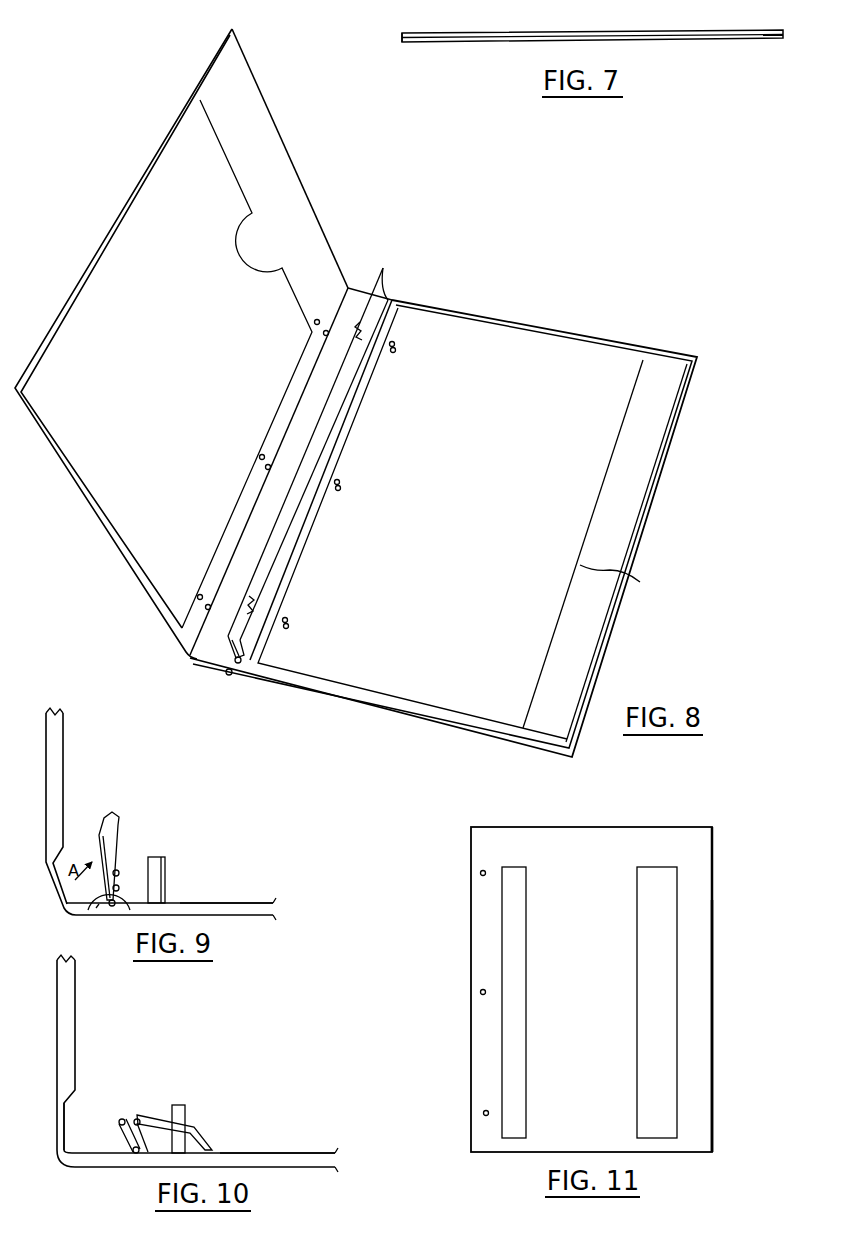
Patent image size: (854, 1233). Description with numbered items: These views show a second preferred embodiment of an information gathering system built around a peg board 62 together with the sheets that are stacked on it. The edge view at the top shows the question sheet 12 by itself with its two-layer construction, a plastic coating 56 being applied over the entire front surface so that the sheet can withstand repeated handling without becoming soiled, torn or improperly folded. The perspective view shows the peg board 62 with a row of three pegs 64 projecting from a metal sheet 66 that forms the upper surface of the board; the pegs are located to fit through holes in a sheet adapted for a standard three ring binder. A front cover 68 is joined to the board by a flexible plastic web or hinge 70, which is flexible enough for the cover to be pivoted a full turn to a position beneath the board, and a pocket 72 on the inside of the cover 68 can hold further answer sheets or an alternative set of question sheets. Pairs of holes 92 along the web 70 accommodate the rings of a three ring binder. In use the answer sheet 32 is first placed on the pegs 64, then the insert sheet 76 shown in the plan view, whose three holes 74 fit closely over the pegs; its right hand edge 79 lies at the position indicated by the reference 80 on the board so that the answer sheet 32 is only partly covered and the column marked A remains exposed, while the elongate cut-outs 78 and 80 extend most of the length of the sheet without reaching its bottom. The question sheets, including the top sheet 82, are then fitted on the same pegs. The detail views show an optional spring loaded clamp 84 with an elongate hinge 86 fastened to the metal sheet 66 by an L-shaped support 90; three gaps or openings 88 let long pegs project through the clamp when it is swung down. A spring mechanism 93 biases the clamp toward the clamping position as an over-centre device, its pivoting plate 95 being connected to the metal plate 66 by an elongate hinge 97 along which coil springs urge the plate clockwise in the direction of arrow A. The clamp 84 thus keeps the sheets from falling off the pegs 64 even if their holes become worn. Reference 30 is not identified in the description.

In FIG. 7, the question sheet 12 is at (458, 46).
In FIG. 7, the plastic coating 56 is at (458, 33).
In FIG. 8, the clip 30 is at (228, 670).
In FIG. 8, the answer sheet 32 is at (643, 468).
In FIG. 8, the peg board 62 is at (670, 355).
In FIG. 9, the peg board 62 is at (240, 918).
In FIG. 10, the peg board 62 is at (285, 1170).
In FIG. 8, the pegs 64 is at (395, 342).
In FIG. 9, the pegs 64 is at (165, 880).
In FIG. 10, the pegs 64 is at (187, 1118).
In FIG. 9, the metal sheet 66 is at (250, 903).
In FIG. 10, the metal sheet 66 is at (293, 1153).
In FIG. 8, the front cover 68 is at (140, 593).
In FIG. 9, the front cover 68 is at (65, 758).
In FIG. 10, the front cover 68 is at (77, 1010).
In FIG. 10, the flexible plastic web or hinge 70 is at (68, 1131).
In FIG. 8, the pocket 72 is at (118, 282).
In FIG. 11, the holes 74 is at (480, 876).
In FIG. 11, the insert sheet 76 is at (714, 955).
In FIG. 11, the cut-out 78 is at (658, 1115).
In FIG. 11, the right hand edge 79 is at (713, 1040).
In FIG. 8, the cut-out 80 is at (624, 580).
In FIG. 11, the cut-out 80 is at (517, 1120).
In FIG. 8, the top sheet 82 is at (560, 347).
In FIG. 8, the spring loaded clamp 84 is at (243, 622).
In FIG. 9, the spring loaded clamp 84 is at (117, 830).
In FIG. 10, the spring loaded clamp 84 is at (162, 1115).
In FIG. 8, the elongate hinge 86 is at (390, 298).
In FIG. 9, the elongate hinge 86 is at (118, 868).
In FIG. 10, the elongate hinge 86 is at (132, 1118).
In FIG. 8, the gaps or openings 88 is at (245, 603).
In FIG. 8, the L-shaped support 90 is at (243, 667).
In FIG. 9, the L-shaped support 90 is at (128, 910).
In FIG. 8, the holes 92 is at (182, 635).
In FIG. 9, the spring mechanism 93 is at (98, 906).
In FIG. 10, the spring mechanism 93 is at (126, 1140).
In FIG. 10, the pivoting plate 95 is at (119, 1130).
In FIG. 10, the elongate hinge 97 is at (137, 1158).